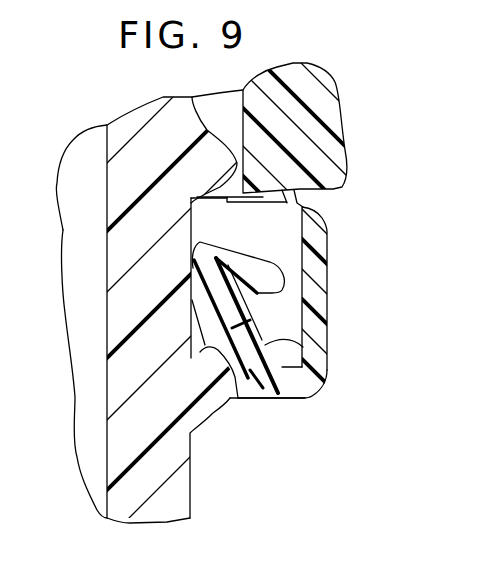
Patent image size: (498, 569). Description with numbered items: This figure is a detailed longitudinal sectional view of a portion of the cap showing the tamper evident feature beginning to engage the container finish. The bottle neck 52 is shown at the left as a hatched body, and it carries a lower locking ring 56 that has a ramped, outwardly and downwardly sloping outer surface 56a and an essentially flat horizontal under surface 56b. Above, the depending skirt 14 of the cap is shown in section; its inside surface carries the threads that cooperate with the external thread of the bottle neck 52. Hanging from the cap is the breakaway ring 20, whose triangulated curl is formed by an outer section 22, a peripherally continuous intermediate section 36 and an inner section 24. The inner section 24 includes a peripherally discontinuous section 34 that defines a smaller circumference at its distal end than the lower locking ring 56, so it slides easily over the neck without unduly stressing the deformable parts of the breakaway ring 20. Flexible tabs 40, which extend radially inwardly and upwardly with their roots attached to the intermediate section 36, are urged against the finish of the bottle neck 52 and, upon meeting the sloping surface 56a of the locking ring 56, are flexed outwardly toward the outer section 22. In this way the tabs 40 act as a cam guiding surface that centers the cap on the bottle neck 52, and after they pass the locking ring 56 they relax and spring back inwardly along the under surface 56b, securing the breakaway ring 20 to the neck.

The depending skirt 14 is at (333, 163).
The breakaway ring 20 is at (202, 306).
The outer section 22 is at (327, 298).
The inner section 24 is at (303, 350).
The peripherally discontinuous section 34 is at (237, 307).
The peripherally continuous intermediate section 36 is at (328, 373).
The flexible tabs 40 is at (203, 291).
The bottle neck 52 is at (105, 433).
The lower locking ring 56 is at (227, 408).
The outer surface 56a is at (248, 398).
The under surface 56b is at (198, 430).